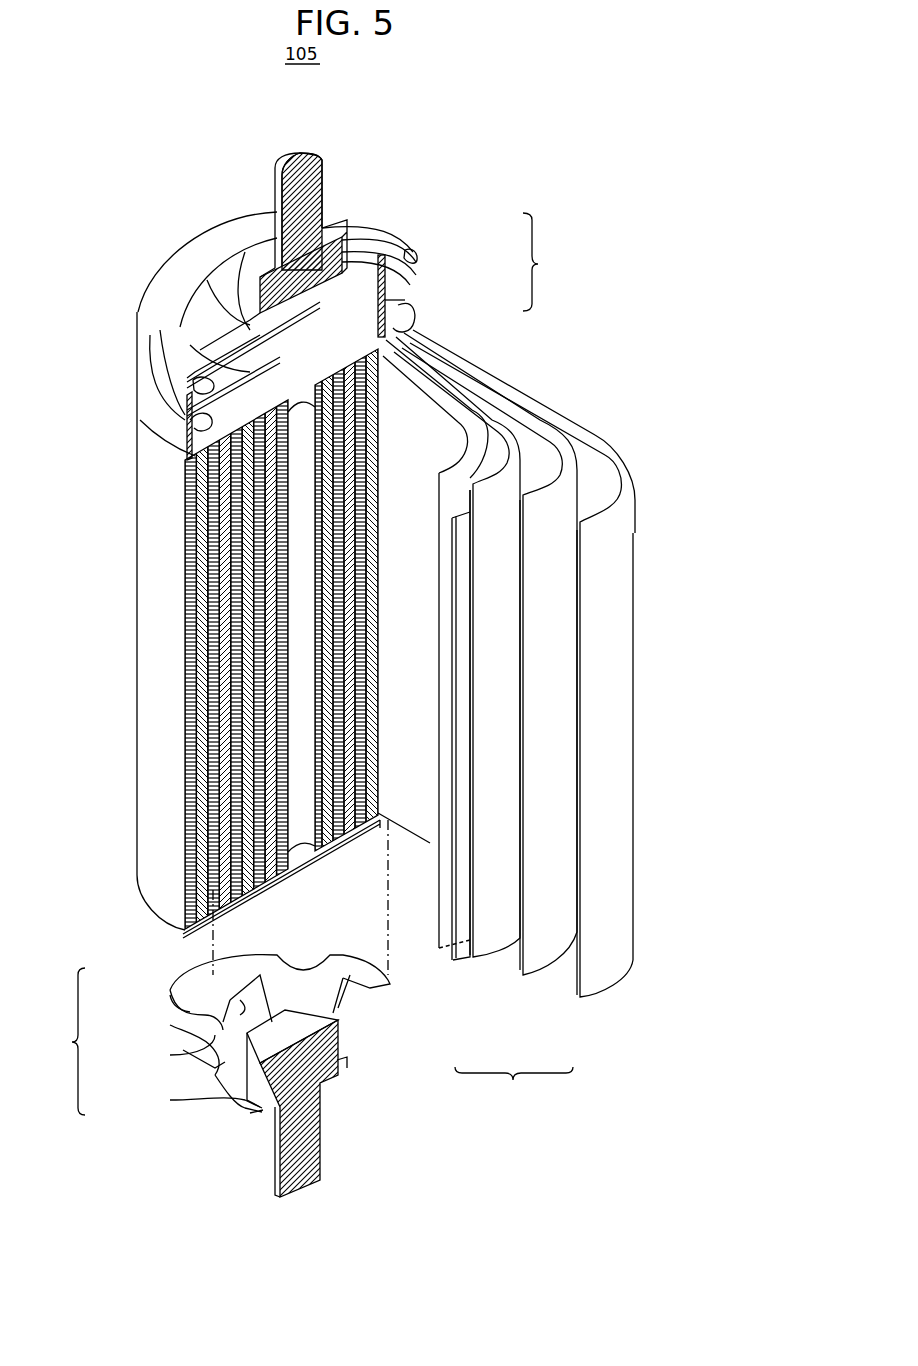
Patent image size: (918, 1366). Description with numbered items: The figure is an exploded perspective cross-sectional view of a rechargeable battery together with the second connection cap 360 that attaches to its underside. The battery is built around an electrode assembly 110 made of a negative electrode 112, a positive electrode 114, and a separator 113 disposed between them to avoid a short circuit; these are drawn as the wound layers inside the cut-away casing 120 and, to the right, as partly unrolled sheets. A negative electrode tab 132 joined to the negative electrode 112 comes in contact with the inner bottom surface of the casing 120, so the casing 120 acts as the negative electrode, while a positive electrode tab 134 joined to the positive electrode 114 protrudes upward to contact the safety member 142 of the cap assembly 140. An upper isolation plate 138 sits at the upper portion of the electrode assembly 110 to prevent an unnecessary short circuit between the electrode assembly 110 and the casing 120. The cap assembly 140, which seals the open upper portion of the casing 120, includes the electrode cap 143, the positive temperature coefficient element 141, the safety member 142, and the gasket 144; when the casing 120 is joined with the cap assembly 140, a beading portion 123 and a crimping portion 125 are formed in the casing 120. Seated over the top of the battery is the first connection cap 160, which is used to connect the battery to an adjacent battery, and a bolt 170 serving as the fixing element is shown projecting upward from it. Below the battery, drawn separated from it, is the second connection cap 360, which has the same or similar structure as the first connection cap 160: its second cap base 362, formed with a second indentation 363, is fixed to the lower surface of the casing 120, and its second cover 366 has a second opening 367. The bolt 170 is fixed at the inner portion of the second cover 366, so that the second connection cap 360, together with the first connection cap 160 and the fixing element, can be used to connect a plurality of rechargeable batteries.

The electrode assembly 110 is at (514, 1082).
The negative electrode 112 is at (453, 960).
The separator 113 is at (497, 948).
The positive electrode 114 is at (542, 963).
The casing 120 is at (148, 579).
The beading portion 123 is at (205, 427).
The crimping portion 125 is at (190, 392).
The negative electrode tab 132 is at (462, 893).
The positive electrode tab 134 is at (415, 362).
The upper isolation plate 138 is at (190, 455).
The cap assembly 140 is at (554, 262).
The positive temperature coefficient element 141 is at (416, 262).
The safety member 142 is at (416, 275).
The electrode cap 143 is at (411, 252).
The gasket 144 is at (413, 318).
The first connection cap 160 is at (250, 217).
The bolt 170 is at (324, 144).
The second connection cap 360 is at (59, 1041).
The second cap base 362 is at (208, 1048).
The second indentation 363 is at (208, 1020).
The second cover 366 is at (228, 1107).
The second opening 367 is at (240, 1005).